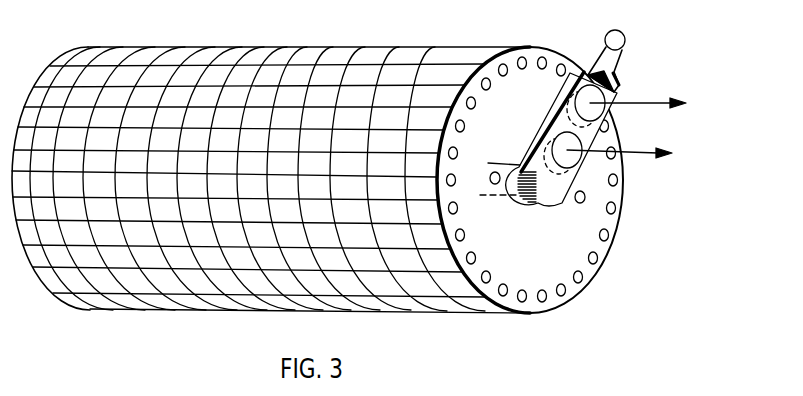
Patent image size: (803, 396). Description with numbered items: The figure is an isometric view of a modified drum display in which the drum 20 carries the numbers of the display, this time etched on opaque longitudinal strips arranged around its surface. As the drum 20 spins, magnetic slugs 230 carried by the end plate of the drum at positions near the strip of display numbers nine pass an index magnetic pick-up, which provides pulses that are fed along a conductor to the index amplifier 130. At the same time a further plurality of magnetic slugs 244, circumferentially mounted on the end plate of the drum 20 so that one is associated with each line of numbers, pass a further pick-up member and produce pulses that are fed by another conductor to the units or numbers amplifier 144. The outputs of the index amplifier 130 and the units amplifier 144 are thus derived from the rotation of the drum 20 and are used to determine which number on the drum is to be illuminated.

The recording drum 20 is at (374, 47).
The index holes 244 is at (546, 52).
The locating pins 230 is at (493, 163).
The units pickup coil 144 is at (586, 50).
The index pickup coil 130 is at (560, 178).